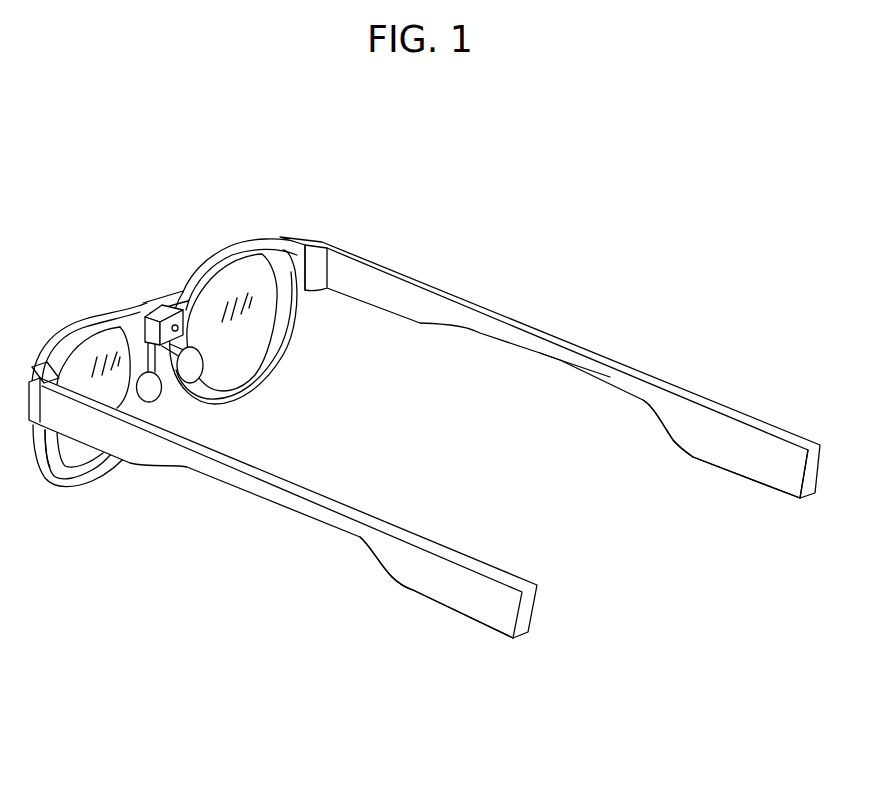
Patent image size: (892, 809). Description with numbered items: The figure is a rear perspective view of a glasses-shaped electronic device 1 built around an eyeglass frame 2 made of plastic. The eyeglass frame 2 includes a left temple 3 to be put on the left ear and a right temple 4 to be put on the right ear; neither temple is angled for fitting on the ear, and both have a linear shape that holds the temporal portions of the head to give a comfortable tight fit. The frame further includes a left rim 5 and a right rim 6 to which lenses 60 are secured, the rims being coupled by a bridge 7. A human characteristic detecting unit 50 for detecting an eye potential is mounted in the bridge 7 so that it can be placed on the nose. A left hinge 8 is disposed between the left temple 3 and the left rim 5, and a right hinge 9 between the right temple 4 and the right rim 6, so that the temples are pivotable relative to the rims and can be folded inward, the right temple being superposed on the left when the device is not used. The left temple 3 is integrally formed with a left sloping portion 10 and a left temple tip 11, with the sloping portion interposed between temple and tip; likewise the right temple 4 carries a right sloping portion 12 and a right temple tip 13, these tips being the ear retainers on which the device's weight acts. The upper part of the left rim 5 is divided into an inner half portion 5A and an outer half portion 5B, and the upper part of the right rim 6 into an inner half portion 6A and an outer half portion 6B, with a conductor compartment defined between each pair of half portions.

The glasses-shaped electronic device 1 is at (577, 264).
The eyeglass frame 2 is at (448, 292).
The left temple 3 is at (272, 494).
The right temple 4 is at (592, 355).
The left rim 5 is at (127, 253).
The inner half portion 5A is at (102, 336).
The outer half portion 5B is at (79, 320).
The right rim 6 is at (285, 176).
The inner half portion 6A is at (260, 256).
The outer half portion 6B is at (237, 243).
The bridge 7 is at (145, 302).
The left hinge 8 is at (37, 362).
The right hinge 9 is at (313, 237).
The left sloping portion 10 is at (392, 572).
The left temple tip 11 is at (450, 592).
The right sloping portion 12 is at (675, 383).
The right temple tip 13 is at (750, 420).
The human characteristic detecting unit 50 is at (172, 308).
The lens 60 is at (278, 342).